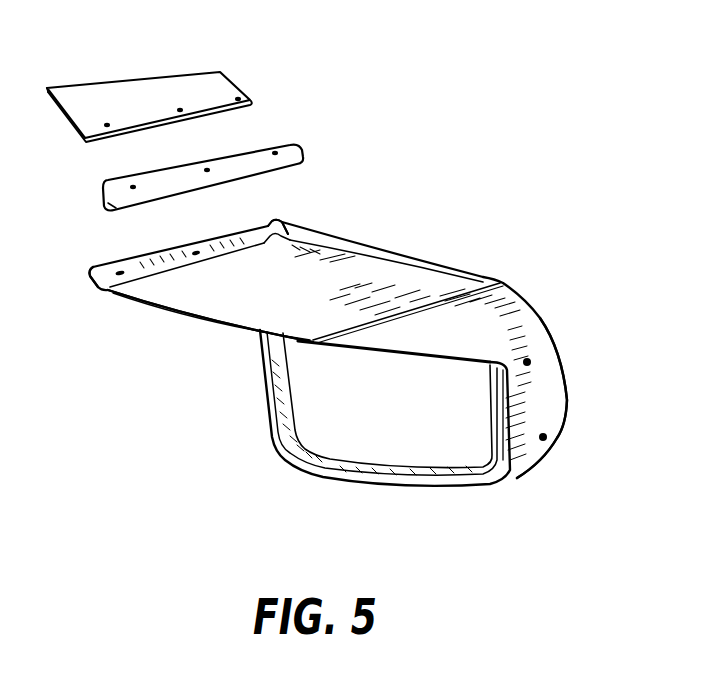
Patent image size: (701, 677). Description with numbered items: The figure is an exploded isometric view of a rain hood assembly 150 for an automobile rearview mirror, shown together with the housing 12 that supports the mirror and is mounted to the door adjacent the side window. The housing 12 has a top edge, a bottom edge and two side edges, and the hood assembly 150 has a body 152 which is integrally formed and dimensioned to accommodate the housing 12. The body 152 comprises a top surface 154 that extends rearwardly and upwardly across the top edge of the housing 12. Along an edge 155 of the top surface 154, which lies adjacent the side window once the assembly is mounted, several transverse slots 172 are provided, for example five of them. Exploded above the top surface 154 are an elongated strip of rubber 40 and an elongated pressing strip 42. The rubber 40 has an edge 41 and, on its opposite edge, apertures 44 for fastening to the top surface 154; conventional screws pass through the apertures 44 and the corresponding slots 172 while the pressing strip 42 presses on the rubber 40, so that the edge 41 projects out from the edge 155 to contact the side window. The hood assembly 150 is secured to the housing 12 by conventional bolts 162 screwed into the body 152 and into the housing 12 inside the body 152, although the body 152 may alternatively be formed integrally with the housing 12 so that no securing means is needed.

The housing 12 is at (397, 483).
The elongated strip of rubber 40 is at (227, 88).
The edge 41 is at (173, 73).
The elongated pressing strip 42 is at (298, 152).
The apertures 44 is at (250, 99).
The rain hood assembly 150 is at (483, 278).
The body 152 is at (557, 416).
The top surface 154 is at (193, 298).
The edge 155 is at (98, 268).
The bolts 162 is at (533, 363).
The transverse slots 172 is at (274, 223).